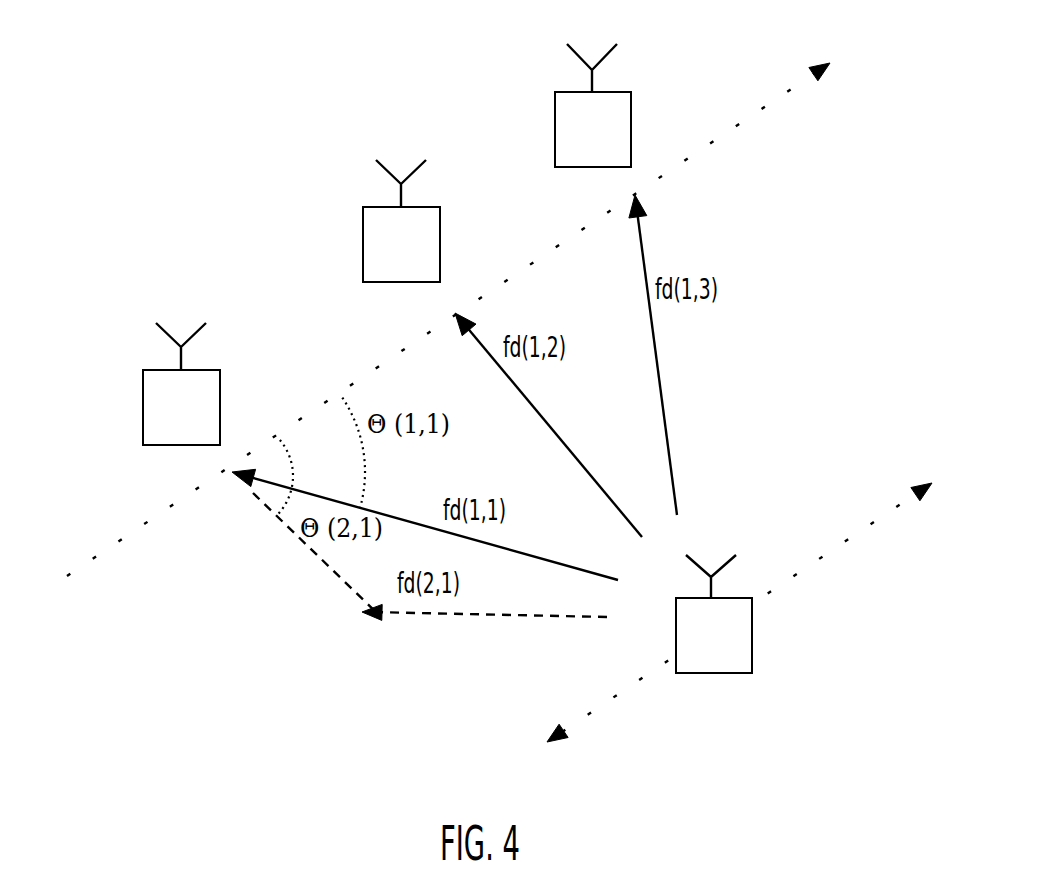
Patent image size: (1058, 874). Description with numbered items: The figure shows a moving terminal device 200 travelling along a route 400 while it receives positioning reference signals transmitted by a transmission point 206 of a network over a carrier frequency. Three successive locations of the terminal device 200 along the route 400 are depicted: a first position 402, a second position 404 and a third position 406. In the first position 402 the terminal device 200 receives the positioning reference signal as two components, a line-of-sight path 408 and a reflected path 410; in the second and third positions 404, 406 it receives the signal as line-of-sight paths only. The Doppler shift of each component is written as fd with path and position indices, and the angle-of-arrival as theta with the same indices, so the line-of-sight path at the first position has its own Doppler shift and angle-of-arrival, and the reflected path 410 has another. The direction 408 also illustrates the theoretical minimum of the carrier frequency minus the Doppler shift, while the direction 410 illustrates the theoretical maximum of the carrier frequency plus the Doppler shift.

The terminal device 200 is at (143, 423).
The transmission point 206 is at (702, 675).
The route 400 is at (742, 123).
The Position 1 402 is at (247, 432).
The Position 2 404 is at (455, 285).
The Position 3 406 is at (640, 165).
The line-of-sight path 408 is at (850, 542).
The reflected path 410 is at (588, 715).